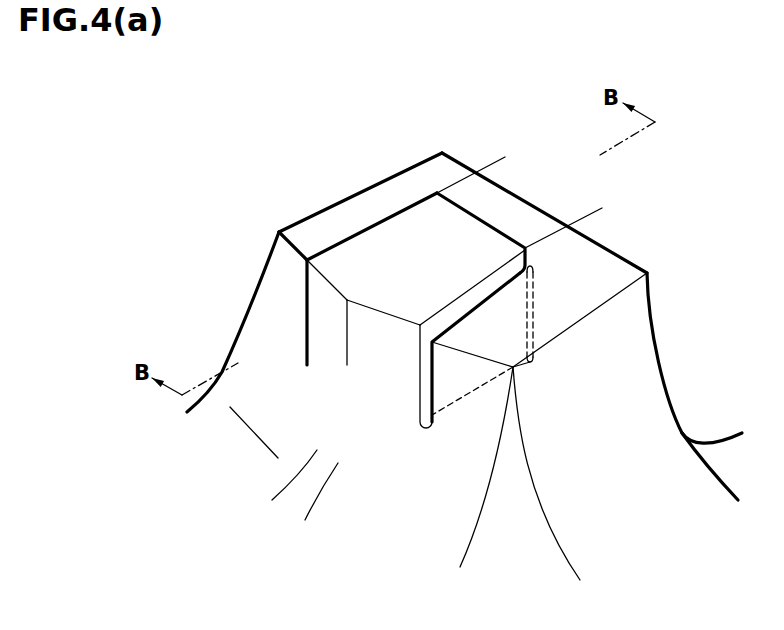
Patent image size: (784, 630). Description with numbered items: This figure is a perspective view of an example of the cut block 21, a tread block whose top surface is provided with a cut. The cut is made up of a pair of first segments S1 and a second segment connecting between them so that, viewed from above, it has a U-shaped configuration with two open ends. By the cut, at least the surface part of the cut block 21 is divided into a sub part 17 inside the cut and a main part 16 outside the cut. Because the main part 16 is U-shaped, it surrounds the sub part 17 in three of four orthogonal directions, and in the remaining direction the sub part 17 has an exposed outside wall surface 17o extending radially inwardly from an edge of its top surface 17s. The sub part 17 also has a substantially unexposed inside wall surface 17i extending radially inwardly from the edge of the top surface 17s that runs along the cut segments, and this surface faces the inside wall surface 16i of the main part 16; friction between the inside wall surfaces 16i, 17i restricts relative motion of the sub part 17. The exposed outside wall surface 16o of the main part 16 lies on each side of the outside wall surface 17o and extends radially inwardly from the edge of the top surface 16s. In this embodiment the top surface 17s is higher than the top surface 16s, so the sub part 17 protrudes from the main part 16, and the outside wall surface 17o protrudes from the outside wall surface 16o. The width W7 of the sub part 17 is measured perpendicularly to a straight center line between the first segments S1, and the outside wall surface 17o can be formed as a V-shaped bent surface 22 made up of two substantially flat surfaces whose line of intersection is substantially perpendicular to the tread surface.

The cut block 21 is at (382, 72).
The main part 16 is at (485, 208).
The sub part 17 is at (413, 248).
The top surface of the main part 16s is at (377, 208).
The top surface of the sub part 17s is at (353, 268).
The outside wall surface of the sub part 17o is at (320, 348).
The inside wall surface of the sub part 17i is at (530, 248).
The outside wall surface of the main part 16o is at (473, 445).
The inside wall surface of the main part 16i is at (455, 384).
The V-shaped bent surface 22 is at (348, 326).
The first segment S1 is at (428, 358).
The width of the sub part W7 is at (505, 157).